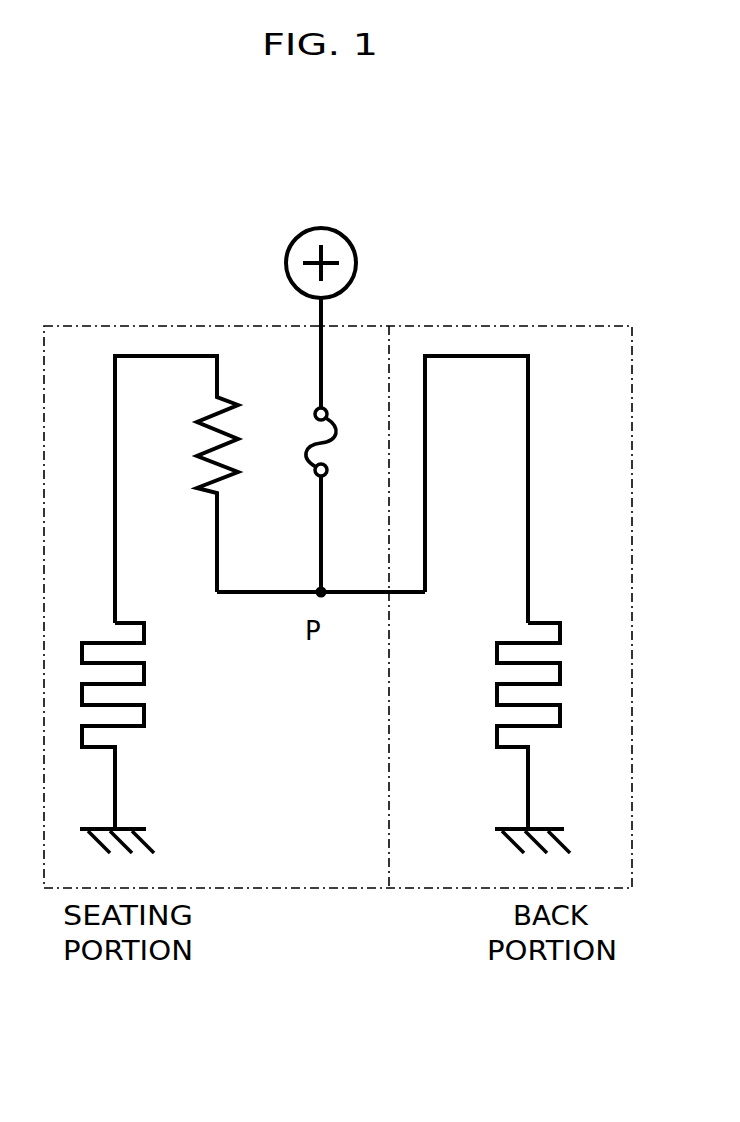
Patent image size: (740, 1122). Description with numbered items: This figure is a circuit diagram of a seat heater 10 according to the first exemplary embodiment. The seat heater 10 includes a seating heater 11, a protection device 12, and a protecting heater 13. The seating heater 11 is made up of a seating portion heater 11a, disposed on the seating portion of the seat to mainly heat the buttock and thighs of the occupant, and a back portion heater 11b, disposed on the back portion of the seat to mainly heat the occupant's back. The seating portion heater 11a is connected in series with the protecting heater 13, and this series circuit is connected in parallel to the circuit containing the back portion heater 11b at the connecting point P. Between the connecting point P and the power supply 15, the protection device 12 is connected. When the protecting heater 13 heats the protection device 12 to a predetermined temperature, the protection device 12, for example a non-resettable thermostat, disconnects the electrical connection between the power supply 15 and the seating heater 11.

The seat heater 10 is at (570, 298).
The seating heater 11 is at (325, 827).
The seating portion heater 11a is at (147, 725).
The back portion heater 11b is at (488, 725).
The protection device 12 is at (347, 425).
The protecting heater 13 is at (190, 413).
The power supply 15 is at (348, 233).